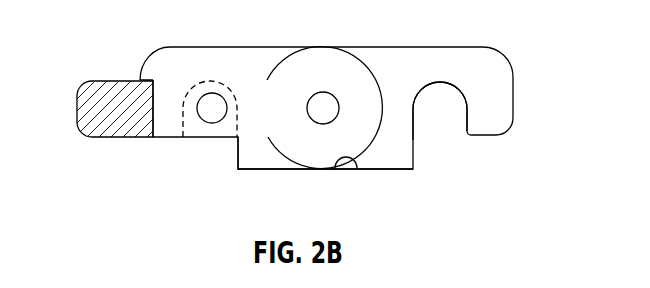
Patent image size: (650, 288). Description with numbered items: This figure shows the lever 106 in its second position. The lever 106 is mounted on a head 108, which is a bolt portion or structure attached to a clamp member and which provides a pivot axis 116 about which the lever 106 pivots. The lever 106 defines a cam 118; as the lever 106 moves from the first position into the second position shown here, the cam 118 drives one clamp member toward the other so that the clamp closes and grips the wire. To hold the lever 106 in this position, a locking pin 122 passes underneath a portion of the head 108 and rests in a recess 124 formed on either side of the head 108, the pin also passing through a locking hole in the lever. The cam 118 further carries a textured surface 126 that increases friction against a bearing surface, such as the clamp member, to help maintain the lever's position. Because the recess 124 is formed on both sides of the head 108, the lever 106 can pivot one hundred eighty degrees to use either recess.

The lever 106 is at (129, 80).
The head 108 is at (428, 47).
The pivot axis 116 is at (316, 93).
The cam 118 is at (303, 160).
The locking pin 122 is at (197, 143).
The recess 124 is at (448, 135).
The textured surface 126 is at (357, 170).